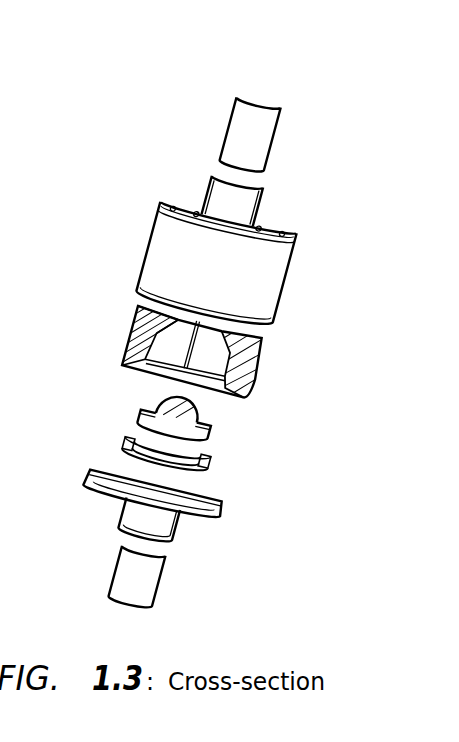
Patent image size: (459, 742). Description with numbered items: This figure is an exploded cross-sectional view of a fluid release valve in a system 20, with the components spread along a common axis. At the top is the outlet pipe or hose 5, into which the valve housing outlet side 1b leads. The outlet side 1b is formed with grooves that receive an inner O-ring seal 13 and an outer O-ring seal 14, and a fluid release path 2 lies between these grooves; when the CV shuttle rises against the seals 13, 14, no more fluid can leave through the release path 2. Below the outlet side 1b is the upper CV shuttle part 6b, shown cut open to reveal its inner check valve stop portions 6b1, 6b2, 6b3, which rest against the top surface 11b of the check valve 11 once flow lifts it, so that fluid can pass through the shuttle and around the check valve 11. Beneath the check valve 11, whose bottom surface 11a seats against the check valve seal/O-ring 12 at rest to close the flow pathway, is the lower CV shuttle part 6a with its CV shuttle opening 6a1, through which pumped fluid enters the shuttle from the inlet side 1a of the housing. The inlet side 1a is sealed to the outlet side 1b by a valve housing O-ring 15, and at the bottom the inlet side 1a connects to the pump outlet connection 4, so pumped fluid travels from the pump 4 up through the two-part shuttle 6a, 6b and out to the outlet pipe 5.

The system 20 is at (138, 91).
The outlet pipe or hose 5 is at (228, 130).
The fluid release path 2 is at (271, 223).
The inner O-ring seal 13 is at (197, 212).
The outer O-ring seal 14 is at (161, 202).
The outlet side 1b is at (283, 289).
The CV shuttle part 6b is at (198, 329).
The inner check valve stop portion 6b1 is at (138, 340).
The inner check valve stop portion 6b2 is at (178, 320).
The inner check valve stop portion 6b3 is at (237, 348).
The check valve 11 is at (185, 423).
The bottom surface 11a is at (152, 428).
The top surface 11b is at (198, 408).
The check valve seal/O-ring 12 is at (135, 437).
The CV shuttle part 6a is at (155, 464).
The CV shuttle opening 6a1 is at (133, 452).
The inlet side 1a is at (199, 533).
The valve housing O-ring 15 is at (222, 507).
The pump outlet connection 4 is at (115, 572).